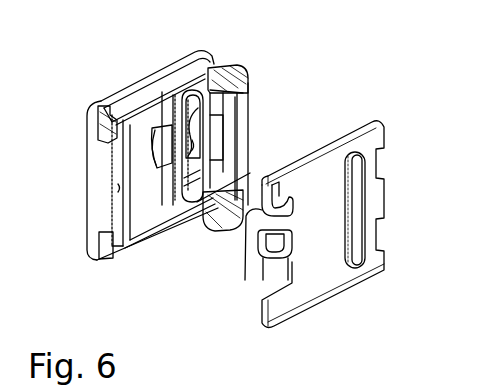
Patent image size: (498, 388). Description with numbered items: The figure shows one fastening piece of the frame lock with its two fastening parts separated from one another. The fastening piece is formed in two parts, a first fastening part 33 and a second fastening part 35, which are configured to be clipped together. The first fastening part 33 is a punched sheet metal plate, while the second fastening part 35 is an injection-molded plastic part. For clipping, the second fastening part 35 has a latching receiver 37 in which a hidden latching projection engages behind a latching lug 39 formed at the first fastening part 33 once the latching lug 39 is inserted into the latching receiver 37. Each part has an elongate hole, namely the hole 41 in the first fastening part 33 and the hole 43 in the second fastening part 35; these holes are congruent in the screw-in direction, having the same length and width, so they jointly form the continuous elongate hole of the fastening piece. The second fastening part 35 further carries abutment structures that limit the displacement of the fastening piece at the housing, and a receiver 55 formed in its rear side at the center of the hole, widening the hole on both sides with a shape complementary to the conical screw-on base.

The first fastening part 33 is at (318, 168).
The second fastening part 35 is at (132, 92).
The latching receiver 37 is at (117, 188).
The latching lug 39 is at (255, 255).
The hole 41 is at (362, 207).
The hole 43 is at (198, 112).
The receiver 55 is at (196, 146).